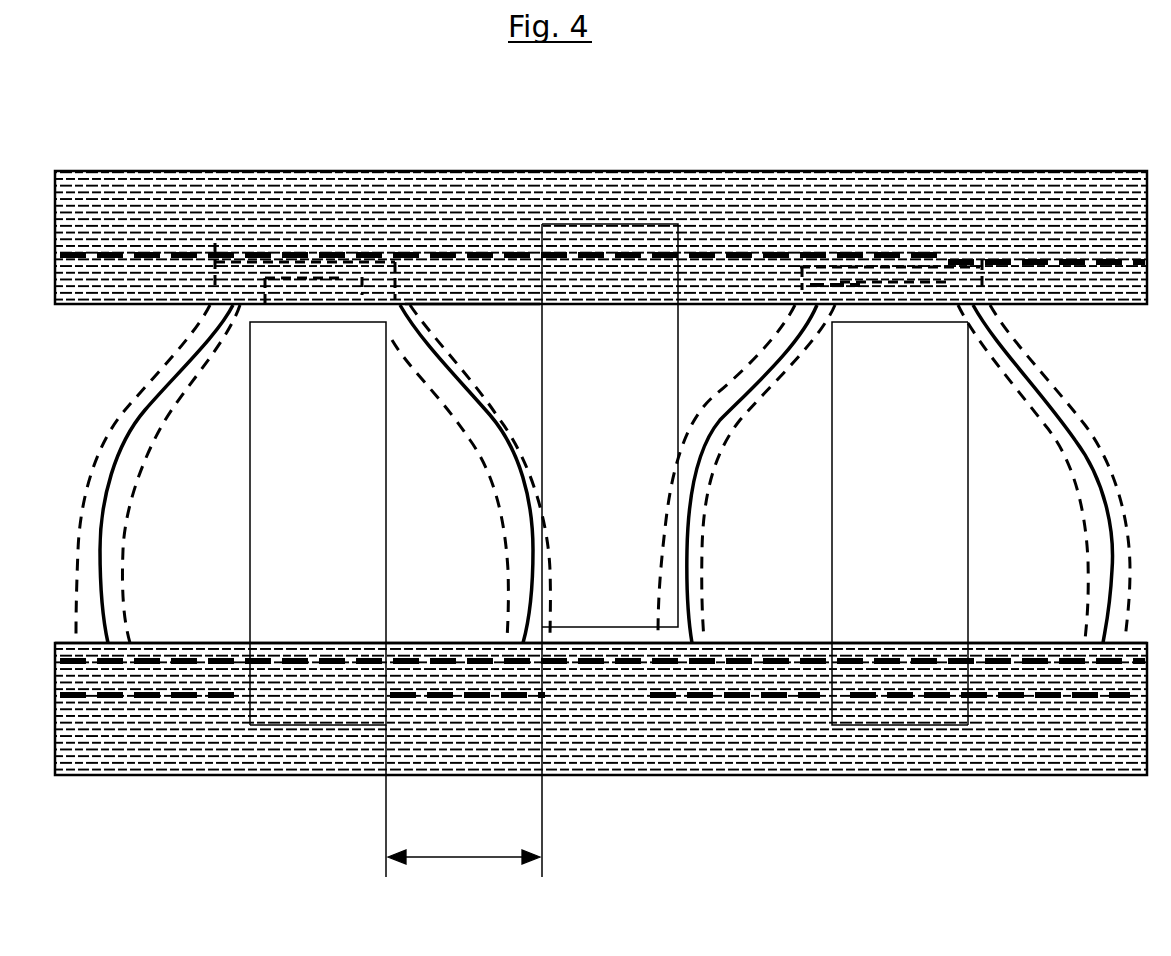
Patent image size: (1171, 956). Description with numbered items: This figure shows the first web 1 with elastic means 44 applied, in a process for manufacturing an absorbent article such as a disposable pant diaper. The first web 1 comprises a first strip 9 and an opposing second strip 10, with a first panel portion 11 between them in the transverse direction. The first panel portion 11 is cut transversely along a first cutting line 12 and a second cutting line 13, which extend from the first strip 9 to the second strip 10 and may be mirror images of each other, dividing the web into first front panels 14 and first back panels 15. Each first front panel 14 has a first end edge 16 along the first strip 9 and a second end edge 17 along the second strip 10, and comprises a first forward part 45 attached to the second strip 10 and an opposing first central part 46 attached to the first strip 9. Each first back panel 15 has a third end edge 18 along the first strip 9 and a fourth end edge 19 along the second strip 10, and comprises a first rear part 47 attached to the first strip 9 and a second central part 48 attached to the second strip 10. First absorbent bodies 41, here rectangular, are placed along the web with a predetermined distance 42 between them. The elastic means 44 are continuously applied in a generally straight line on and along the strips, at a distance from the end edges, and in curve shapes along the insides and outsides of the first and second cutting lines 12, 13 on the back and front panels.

The first web 1 is at (266, 157).
The first strip 9 is at (117, 733).
The second strip 10 is at (187, 203).
The first panel portion 11 is at (128, 398).
The first cutting line 12 is at (408, 300).
The second cutting line 13 is at (790, 365).
The first front panel 14 is at (728, 348).
The first back panel 15 is at (1005, 413).
The first end edge 16 is at (597, 645).
The second end edge 17 is at (495, 315).
The third end edge 18 is at (185, 645).
The fourth end edge 19 is at (345, 308).
The first absorbent body 41 is at (280, 630).
The predetermined distance 42 is at (470, 846).
The elastic means 44 is at (1083, 597).
The first forward part 45 is at (512, 348).
The first central part 46 is at (608, 607).
The first rear part 47 is at (988, 603).
The second central part 48 is at (818, 295).